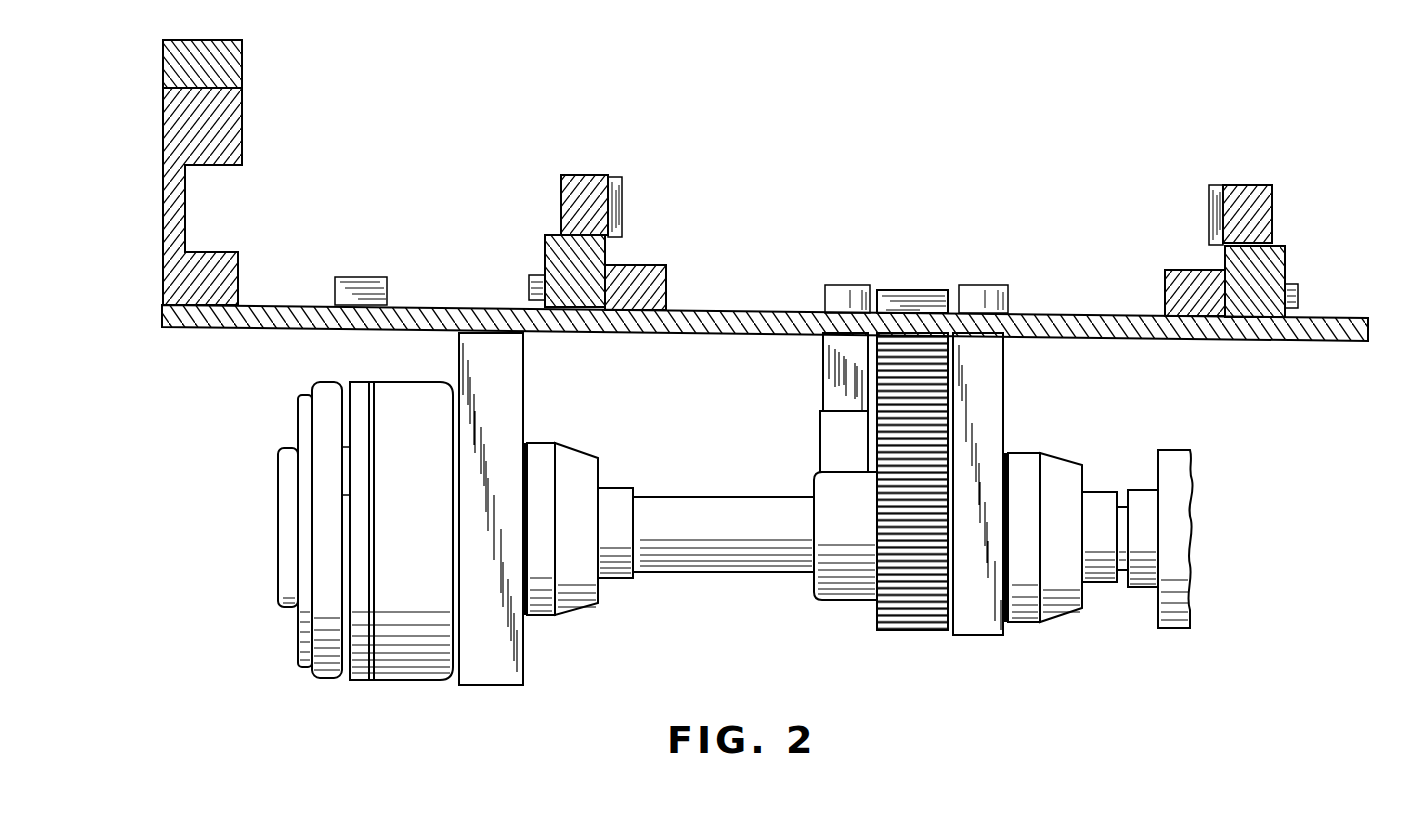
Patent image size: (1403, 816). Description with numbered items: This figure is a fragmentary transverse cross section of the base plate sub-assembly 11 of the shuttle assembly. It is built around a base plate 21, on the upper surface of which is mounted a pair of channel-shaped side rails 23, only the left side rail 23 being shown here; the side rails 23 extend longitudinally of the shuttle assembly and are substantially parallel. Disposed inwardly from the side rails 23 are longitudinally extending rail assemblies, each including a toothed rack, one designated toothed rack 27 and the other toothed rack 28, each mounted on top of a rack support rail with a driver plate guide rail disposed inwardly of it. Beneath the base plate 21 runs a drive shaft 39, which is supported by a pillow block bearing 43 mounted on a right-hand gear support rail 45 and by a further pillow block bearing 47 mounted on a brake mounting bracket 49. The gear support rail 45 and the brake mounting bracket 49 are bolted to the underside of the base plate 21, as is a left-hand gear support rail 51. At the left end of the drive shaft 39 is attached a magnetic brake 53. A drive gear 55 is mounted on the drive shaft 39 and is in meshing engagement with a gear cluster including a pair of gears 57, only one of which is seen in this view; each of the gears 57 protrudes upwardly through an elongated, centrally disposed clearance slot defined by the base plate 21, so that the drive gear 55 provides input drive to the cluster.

The base plate sub-assembly 11 is at (418, 178).
The base plate 21 is at (1158, 341).
The side rail 23 is at (233, 140).
The toothed rack 27 is at (1212, 221).
The toothed rack 28 is at (614, 216).
The drive shaft 39 is at (672, 506).
The pillow block bearing 43 is at (1040, 453).
The right-hand gear support rail 45 is at (993, 397).
The pillow block bearing 47 is at (575, 448).
The brake mounting bracket 49 is at (507, 407).
The left-hand gear support rail 51 is at (845, 383).
The magnetic brake 53 is at (385, 688).
The drive gear 55 is at (900, 620).
The gear 57 is at (900, 294).